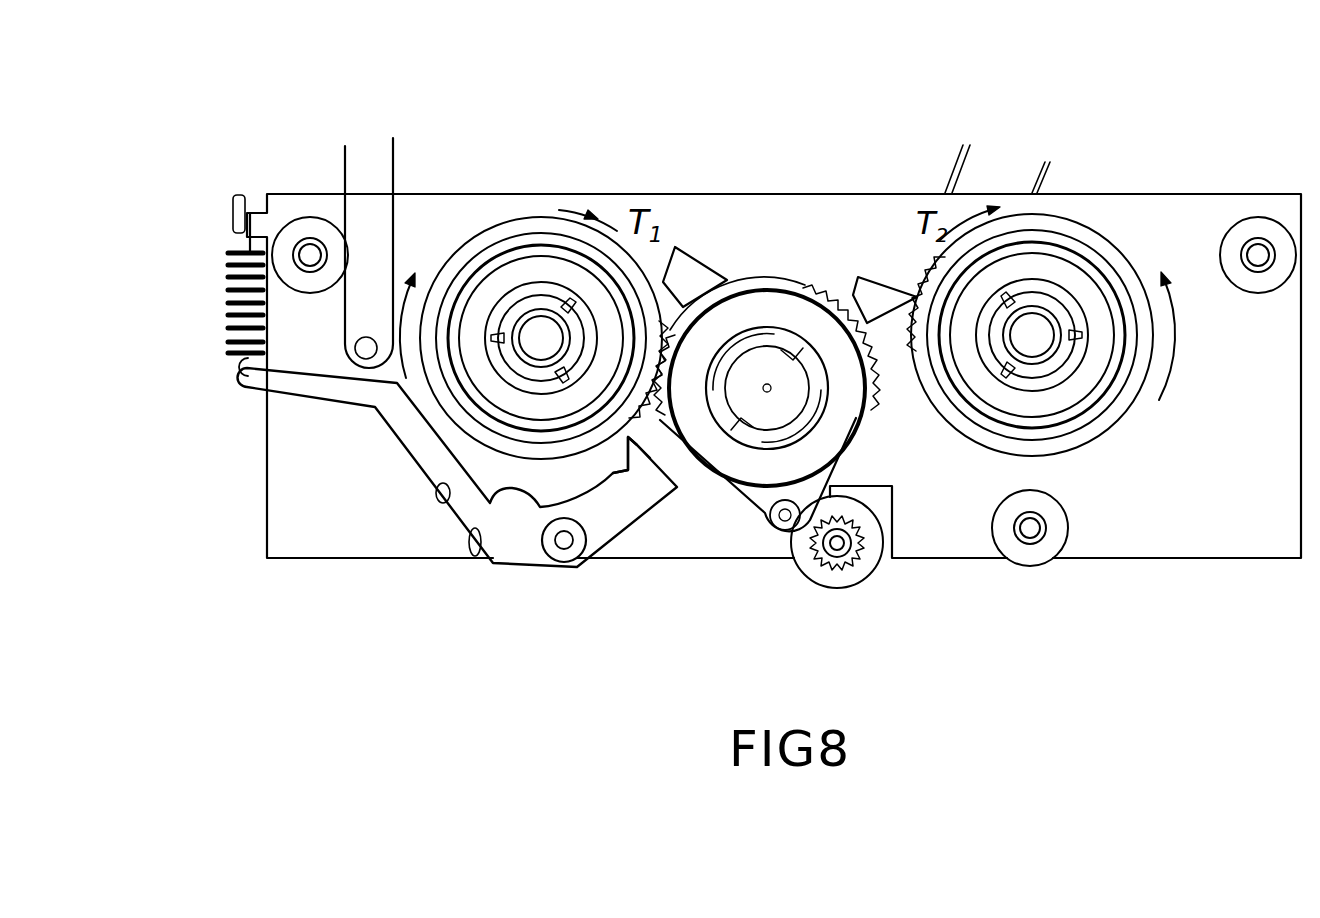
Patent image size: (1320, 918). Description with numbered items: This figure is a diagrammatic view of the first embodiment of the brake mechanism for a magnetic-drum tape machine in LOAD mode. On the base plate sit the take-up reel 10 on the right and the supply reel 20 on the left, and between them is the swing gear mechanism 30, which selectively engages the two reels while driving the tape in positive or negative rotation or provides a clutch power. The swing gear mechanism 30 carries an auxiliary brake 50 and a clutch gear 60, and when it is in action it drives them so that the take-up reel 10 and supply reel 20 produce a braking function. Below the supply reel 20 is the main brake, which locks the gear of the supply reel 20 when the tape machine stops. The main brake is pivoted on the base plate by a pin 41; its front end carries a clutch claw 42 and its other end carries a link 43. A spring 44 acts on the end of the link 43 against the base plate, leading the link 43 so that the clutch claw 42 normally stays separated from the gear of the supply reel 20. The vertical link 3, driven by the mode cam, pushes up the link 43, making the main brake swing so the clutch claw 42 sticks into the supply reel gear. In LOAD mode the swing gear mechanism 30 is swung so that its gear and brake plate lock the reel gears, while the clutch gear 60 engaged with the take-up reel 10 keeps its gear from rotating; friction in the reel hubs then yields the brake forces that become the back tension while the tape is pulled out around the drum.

The link 3 is at (365, 168).
The take-up reel 10 is at (1097, 278).
The supply reel 20 is at (537, 230).
The swing gear mechanism 30 is at (765, 310).
The pin 41 is at (564, 546).
The clutch claw 42 is at (627, 450).
The link 43 is at (305, 390).
The spring 44 is at (232, 290).
The auxiliary brake 50 is at (675, 247).
The clutch gear 60 is at (872, 296).